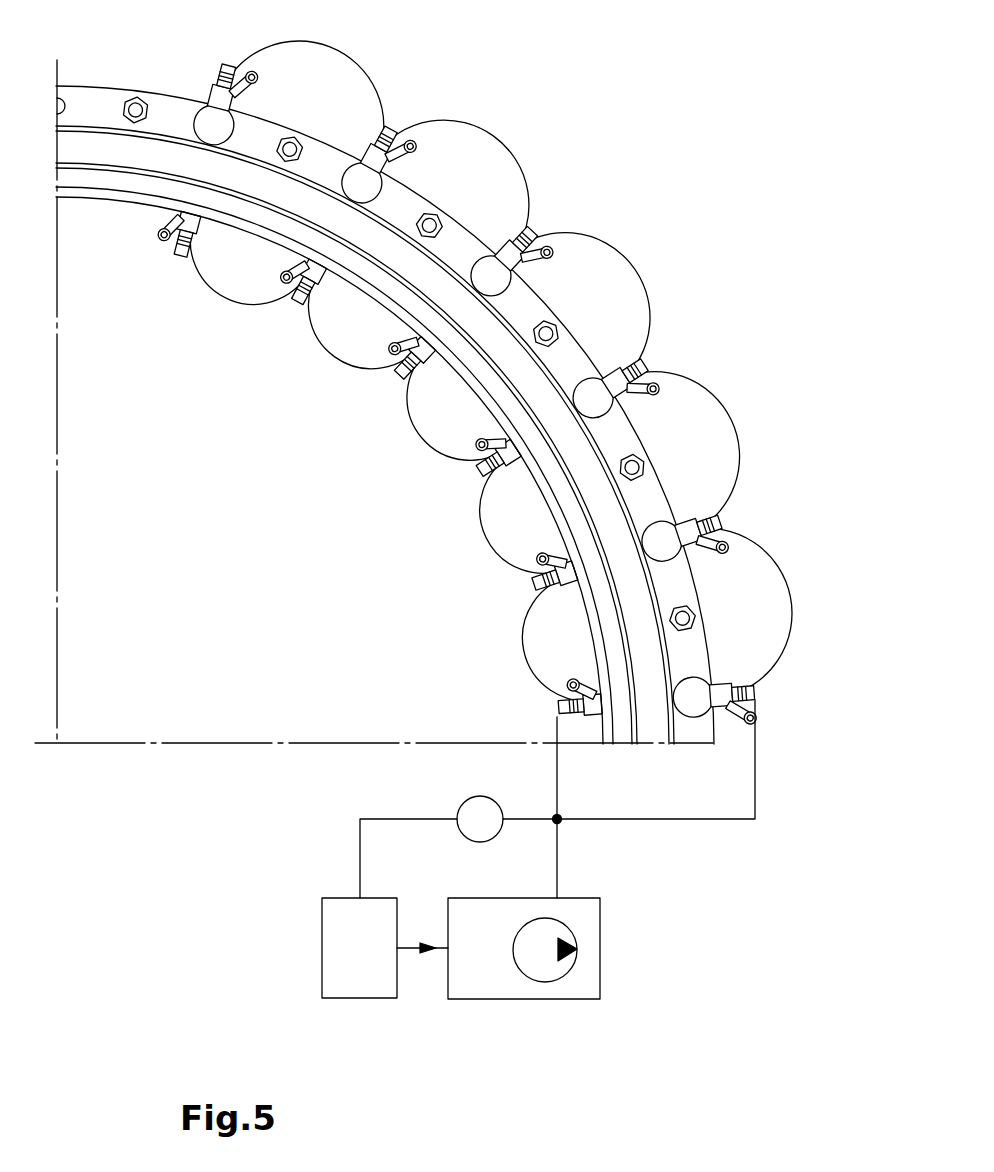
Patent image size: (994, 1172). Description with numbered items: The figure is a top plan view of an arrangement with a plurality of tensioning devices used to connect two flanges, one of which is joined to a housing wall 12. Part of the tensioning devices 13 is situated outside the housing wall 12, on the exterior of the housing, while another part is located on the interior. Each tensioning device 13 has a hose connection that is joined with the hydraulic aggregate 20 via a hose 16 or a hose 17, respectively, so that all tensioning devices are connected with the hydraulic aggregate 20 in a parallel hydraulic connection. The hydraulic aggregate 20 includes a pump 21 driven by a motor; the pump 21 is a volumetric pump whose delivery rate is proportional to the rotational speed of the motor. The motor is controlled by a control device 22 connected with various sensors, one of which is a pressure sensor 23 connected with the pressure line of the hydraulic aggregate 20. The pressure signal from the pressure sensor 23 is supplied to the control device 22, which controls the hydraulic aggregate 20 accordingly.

The housing wall 12 is at (533, 388).
The tensioning device 13 is at (593, 400).
The hose 16 is at (788, 603).
The hose 17 is at (530, 654).
The hydraulic aggregate 20 is at (595, 941).
The pump 21 is at (533, 982).
The control device 22 is at (340, 936).
The pressure sensor 23 is at (465, 806).